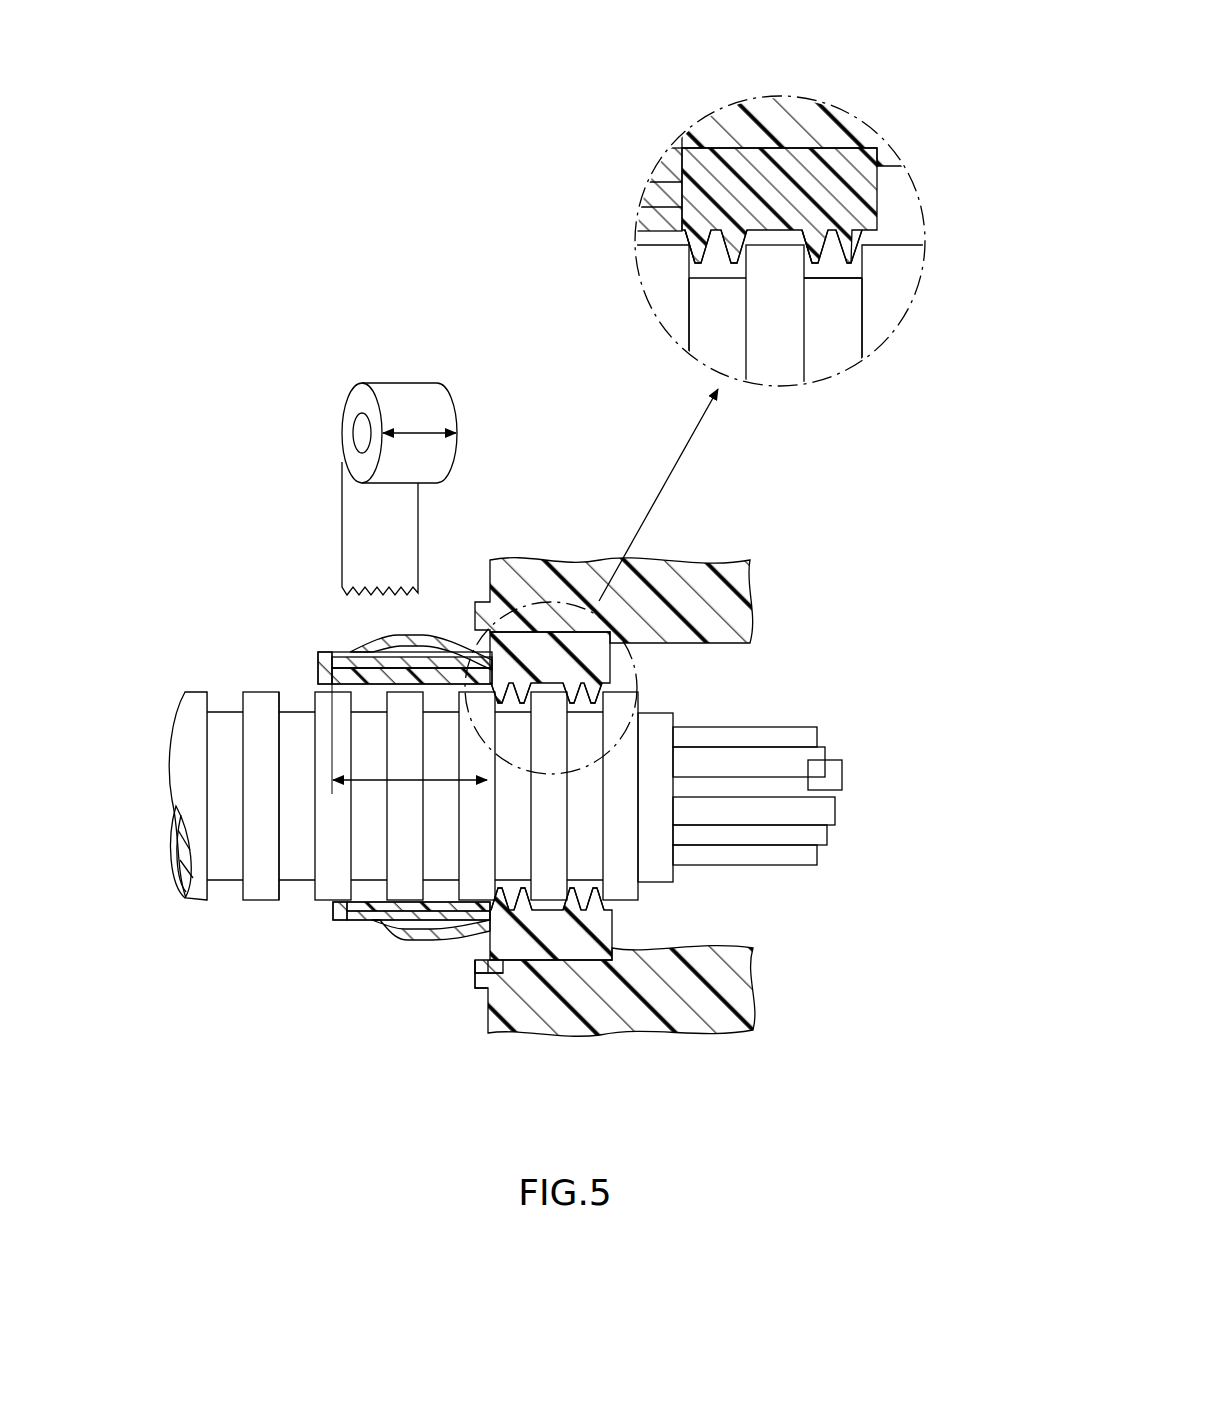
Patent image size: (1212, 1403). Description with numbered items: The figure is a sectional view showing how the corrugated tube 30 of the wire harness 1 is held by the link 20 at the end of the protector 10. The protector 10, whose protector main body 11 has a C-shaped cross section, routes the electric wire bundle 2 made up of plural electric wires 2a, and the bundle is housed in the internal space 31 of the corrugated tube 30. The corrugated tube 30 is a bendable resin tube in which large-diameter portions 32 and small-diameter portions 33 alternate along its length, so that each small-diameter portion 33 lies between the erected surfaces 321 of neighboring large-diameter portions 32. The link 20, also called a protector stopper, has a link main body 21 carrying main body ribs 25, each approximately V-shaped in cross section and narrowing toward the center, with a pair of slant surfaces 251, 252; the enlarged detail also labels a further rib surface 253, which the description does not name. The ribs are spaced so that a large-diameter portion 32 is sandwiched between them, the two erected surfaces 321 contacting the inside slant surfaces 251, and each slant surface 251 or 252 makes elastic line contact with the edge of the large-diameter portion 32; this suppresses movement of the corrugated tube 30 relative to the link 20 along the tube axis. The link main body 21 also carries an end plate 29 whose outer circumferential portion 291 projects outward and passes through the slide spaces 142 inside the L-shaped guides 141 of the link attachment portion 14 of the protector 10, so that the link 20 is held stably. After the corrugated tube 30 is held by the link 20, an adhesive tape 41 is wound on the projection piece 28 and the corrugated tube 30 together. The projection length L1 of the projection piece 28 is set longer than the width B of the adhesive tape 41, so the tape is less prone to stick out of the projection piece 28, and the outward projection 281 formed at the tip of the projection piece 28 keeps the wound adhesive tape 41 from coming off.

The wire harness 1 is at (224, 470).
The electric wire bundle 2 is at (907, 723).
The electric wire 2a is at (810, 714).
The protector 10 is at (566, 480).
The protector main body 11 is at (693, 593).
The link attachment portion 14 is at (536, 567).
The guide 141 is at (482, 980).
The slide space 142 is at (505, 987).
The link 20 is at (547, 628).
The link main body 21 is at (778, 130).
The main body rib 25 is at (740, 245).
The slant surface 251 is at (806, 264).
The slant surface 252 is at (690, 260).
The protrusion bottom surface 253 is at (862, 282).
The projection piece 28 is at (330, 657).
The projection 281 is at (352, 680).
The end plate 29 is at (482, 937).
The outer circumferential portion 291 is at (478, 965).
The corrugated tube 30 is at (200, 672).
The internal space 31 is at (190, 874).
The large-diameter portion 32 is at (262, 892).
The erected surface 321 is at (287, 700).
The small-diameter portion 33 is at (222, 872).
The adhesive tape 41 is at (363, 370).
The width of the adhesive tape B is at (415, 433).
The projection length L1 is at (402, 802).